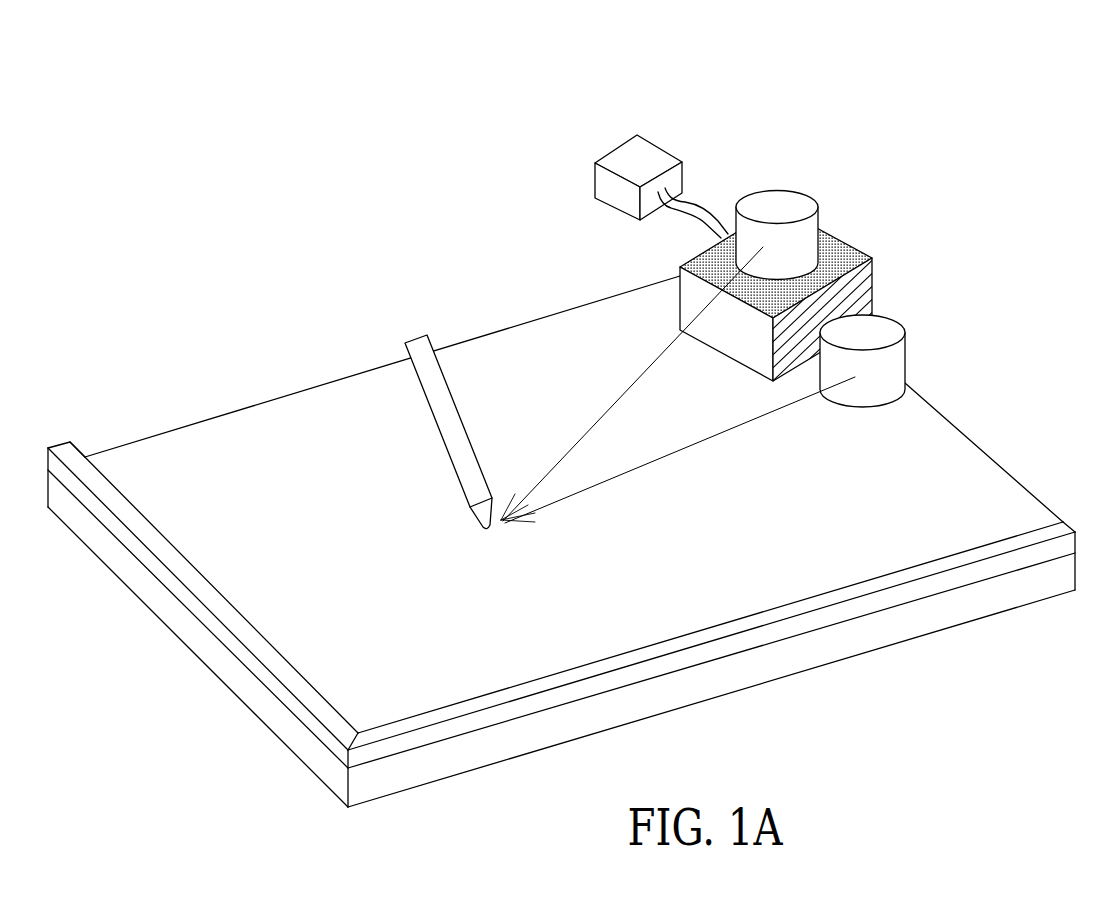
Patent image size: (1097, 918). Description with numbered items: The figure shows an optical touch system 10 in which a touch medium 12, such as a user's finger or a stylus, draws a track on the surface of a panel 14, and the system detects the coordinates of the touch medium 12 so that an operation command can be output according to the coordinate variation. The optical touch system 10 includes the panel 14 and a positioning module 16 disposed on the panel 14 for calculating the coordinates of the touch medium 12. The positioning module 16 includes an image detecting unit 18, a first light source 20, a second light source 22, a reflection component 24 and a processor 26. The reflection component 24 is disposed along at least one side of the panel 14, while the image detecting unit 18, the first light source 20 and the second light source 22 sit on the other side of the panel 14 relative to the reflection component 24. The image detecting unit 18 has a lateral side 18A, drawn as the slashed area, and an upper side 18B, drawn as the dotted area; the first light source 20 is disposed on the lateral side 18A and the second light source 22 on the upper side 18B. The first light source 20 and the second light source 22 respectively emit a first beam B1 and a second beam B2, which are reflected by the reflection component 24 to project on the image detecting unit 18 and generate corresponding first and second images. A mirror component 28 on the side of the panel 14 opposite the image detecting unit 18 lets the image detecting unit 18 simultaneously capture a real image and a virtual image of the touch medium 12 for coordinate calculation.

The optical touch system 10 is at (250, 72).
The touch medium 12 is at (430, 372).
The panel 14 is at (283, 445).
The positioning module 16 is at (841, 68).
The image detecting unit 18 is at (754, 316).
The lateral side 18A is at (797, 353).
The upper side 18B is at (680, 267).
The first light source 20 is at (892, 368).
The second light source 22 is at (803, 208).
The reflection component 24 is at (445, 712).
The processor 26 is at (648, 155).
The mirror component 28 is at (182, 565).
The first beam B1 is at (680, 450).
The second beam B2 is at (632, 384).